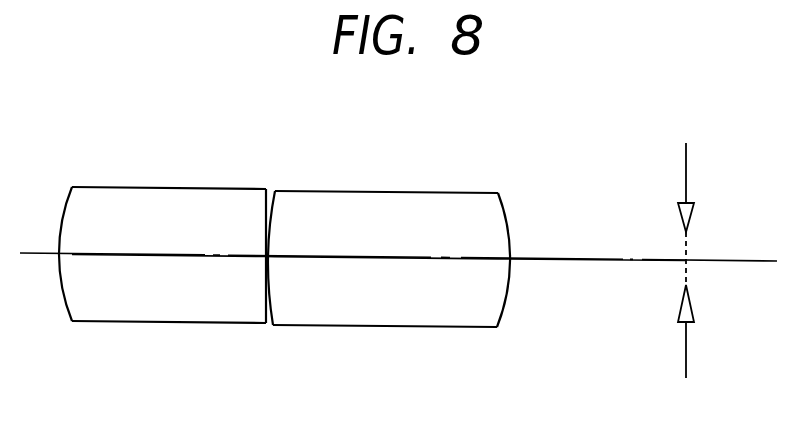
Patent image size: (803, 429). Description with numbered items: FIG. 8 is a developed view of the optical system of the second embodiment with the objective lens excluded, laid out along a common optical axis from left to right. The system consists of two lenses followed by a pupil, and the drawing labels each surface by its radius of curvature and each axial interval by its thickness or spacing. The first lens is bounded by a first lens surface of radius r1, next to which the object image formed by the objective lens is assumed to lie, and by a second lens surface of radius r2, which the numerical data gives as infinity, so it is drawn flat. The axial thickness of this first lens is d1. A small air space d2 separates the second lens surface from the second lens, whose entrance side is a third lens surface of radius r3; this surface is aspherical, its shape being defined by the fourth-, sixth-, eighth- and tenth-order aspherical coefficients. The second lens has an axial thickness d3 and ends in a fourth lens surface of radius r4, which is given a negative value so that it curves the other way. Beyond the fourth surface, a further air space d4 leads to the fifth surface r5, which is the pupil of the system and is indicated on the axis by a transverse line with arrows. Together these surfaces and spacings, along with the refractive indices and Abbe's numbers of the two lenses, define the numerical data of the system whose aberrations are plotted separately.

The radius of curvature of first lens surface r1 is at (65, 196).
The radius of curvature of second lens surface r2 is at (266, 188).
The radius of curvature of third lens surface r3 is at (276, 197).
The radius of curvature of fourth lens surface r4 is at (506, 203).
The pupil surface r5 is at (686, 180).
The thickness of first lens d1 is at (163, 252).
The space between first and second lenses d2 is at (270, 245).
The thickness of second lens d3 is at (425, 258).
The space between second lens and pupil d4 is at (602, 260).